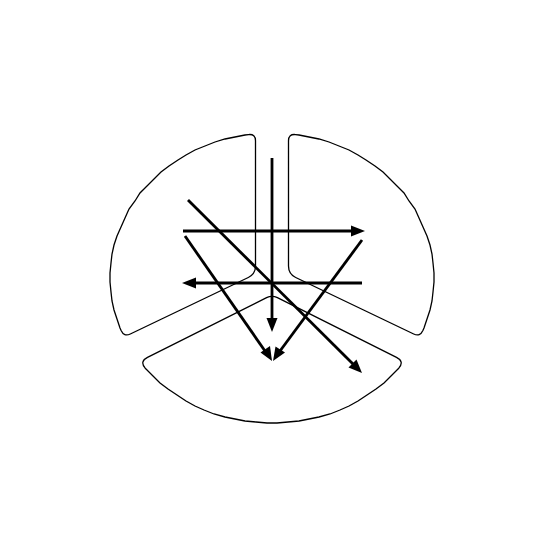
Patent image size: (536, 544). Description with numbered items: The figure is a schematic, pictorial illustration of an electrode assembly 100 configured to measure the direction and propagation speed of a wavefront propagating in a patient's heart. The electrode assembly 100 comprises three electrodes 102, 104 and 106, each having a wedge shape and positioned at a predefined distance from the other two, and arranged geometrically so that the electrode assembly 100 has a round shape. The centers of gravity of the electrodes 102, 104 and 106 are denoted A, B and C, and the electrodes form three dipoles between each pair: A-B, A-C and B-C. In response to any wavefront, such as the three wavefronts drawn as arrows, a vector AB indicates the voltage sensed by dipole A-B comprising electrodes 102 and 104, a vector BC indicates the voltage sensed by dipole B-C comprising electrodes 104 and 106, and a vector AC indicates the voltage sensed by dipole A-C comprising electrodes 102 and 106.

The electrode assembly 100 is at (123, 54).
The electrode 102 is at (215, 160).
The electrode 104 is at (350, 183).
The electrode 106 is at (220, 392).